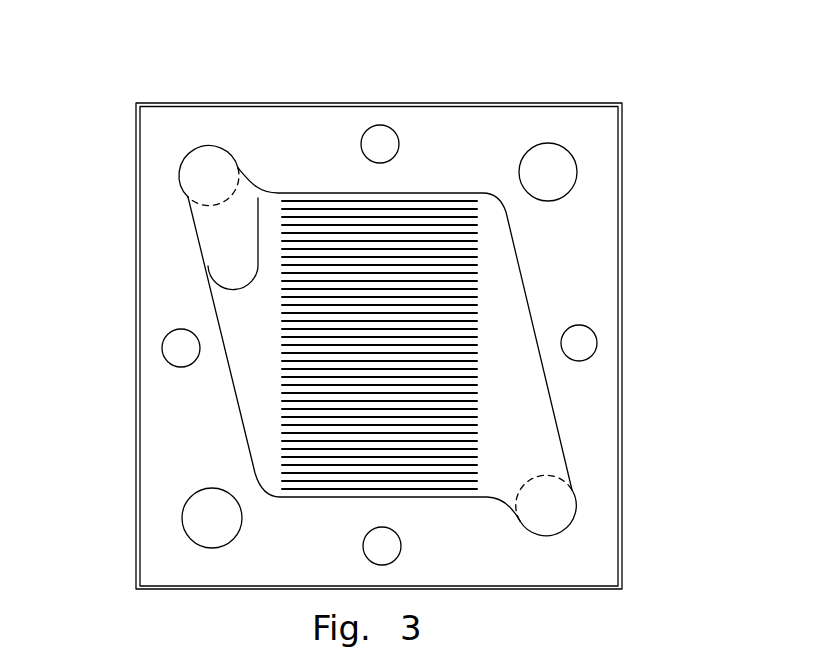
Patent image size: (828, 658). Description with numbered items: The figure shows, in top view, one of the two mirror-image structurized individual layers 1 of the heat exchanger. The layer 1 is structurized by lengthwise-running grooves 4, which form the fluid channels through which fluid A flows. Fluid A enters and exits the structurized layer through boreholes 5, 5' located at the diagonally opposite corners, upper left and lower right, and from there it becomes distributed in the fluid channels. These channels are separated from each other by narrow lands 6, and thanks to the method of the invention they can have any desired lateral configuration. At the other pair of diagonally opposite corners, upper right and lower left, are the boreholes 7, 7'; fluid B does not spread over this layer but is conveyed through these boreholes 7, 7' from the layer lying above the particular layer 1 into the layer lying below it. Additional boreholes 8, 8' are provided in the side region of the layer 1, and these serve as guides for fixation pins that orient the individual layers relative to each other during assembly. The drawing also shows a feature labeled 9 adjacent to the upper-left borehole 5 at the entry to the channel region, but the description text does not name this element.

The individual layer 1 is at (340, 88).
The lengthwise-running grooves 4 is at (477, 380).
The borehole 5 is at (211, 121).
The borehole 5' is at (627, 505).
The narrow lands 6 is at (477, 255).
The borehole 7 is at (578, 116).
The borehole 7' is at (145, 560).
The additional borehole 8 is at (455, 329).
The additional borehole 8' is at (393, 302).
The distribution channel 9 is at (207, 264).